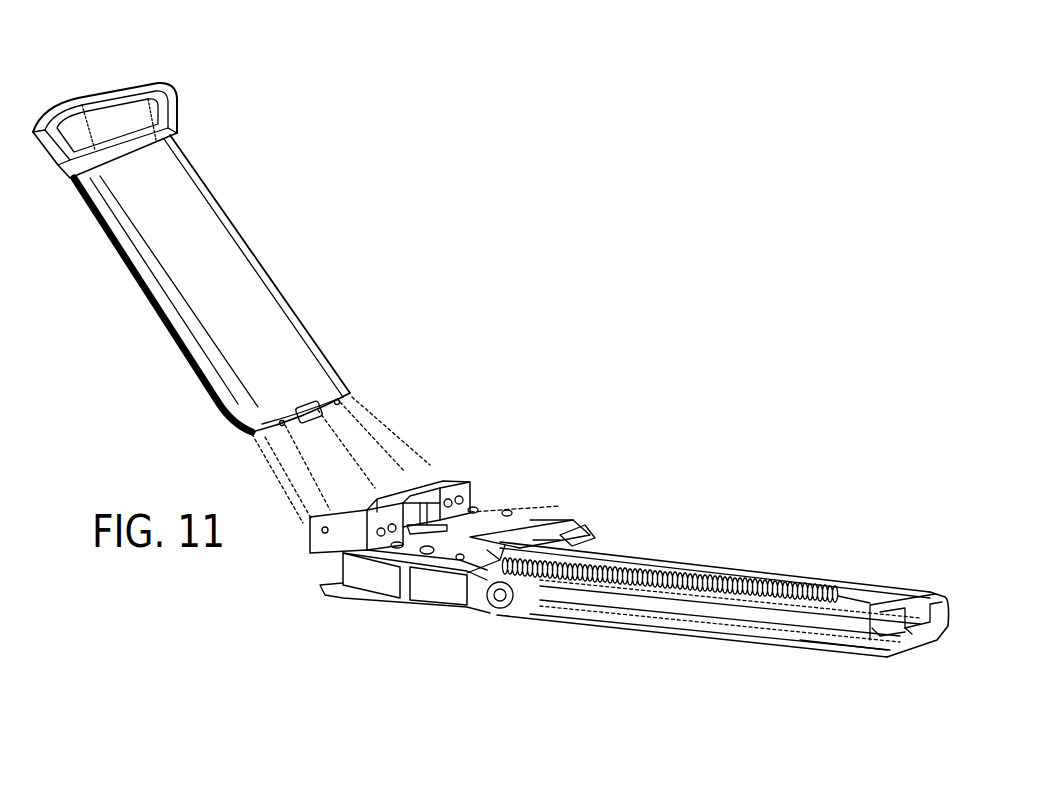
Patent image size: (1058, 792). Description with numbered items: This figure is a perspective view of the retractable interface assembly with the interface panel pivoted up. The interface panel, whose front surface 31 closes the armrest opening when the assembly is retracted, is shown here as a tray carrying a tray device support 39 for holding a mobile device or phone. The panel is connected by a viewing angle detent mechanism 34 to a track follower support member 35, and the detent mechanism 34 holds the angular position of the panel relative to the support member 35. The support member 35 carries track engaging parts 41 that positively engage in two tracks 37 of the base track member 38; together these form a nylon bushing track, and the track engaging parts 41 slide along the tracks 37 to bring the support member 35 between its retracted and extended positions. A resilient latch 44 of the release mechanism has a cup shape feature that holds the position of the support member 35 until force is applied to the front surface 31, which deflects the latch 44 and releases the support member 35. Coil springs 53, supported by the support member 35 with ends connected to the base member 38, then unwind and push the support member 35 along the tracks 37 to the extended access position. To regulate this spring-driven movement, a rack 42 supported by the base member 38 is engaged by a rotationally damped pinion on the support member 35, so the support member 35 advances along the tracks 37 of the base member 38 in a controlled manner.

The front surface 31 is at (126, 92).
The viewing angle detent mechanism 34 is at (447, 490).
The track follower support member 35 is at (547, 540).
The tracks 37 is at (662, 603).
The base track member 38 is at (806, 645).
The tray device support 39 is at (358, 432).
The track engaging parts 41 is at (588, 535).
The rack 42 is at (697, 577).
The resilient latch 44 is at (873, 610).
The coil springs 53 is at (500, 620).